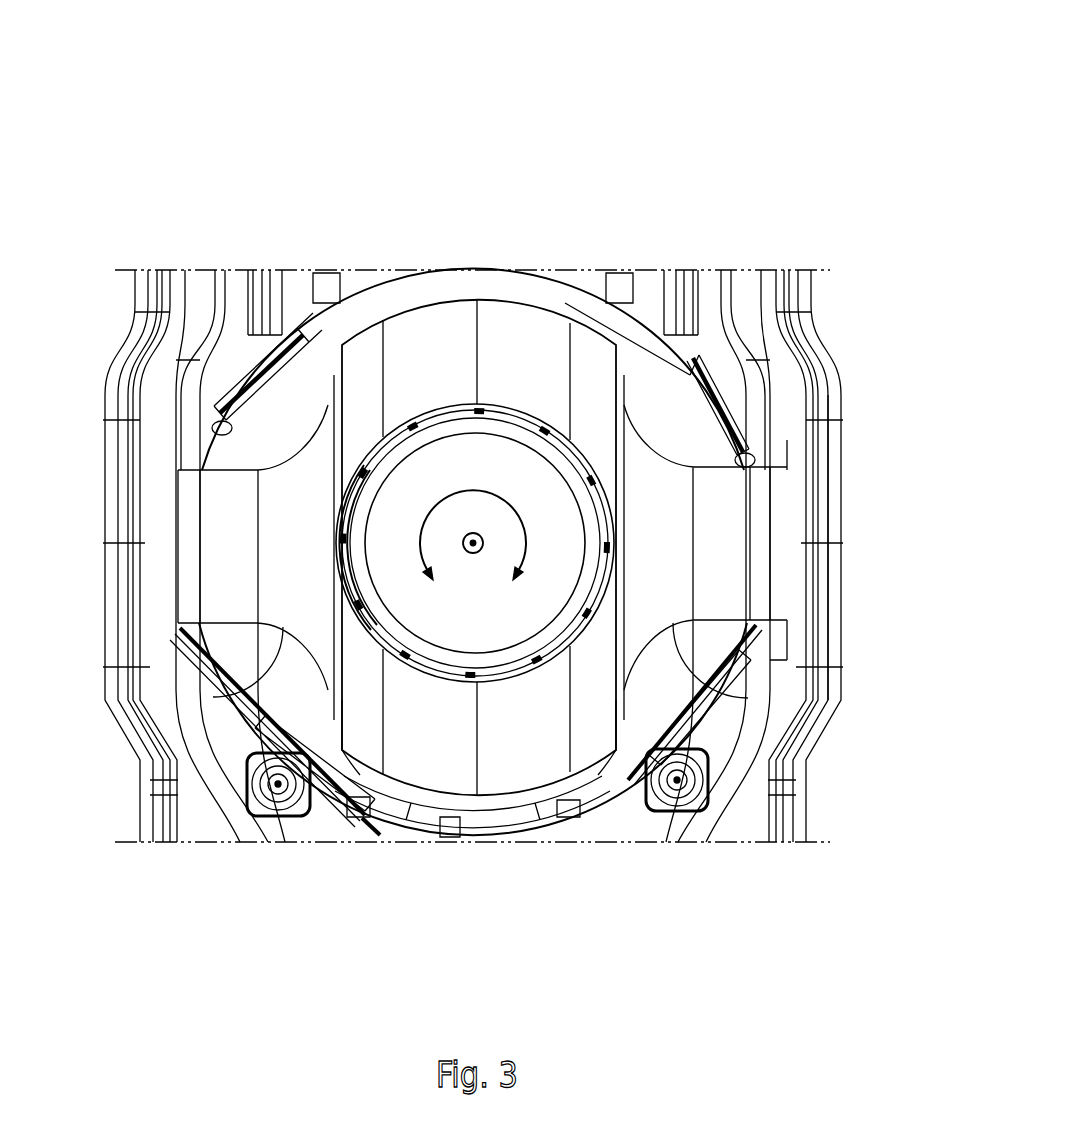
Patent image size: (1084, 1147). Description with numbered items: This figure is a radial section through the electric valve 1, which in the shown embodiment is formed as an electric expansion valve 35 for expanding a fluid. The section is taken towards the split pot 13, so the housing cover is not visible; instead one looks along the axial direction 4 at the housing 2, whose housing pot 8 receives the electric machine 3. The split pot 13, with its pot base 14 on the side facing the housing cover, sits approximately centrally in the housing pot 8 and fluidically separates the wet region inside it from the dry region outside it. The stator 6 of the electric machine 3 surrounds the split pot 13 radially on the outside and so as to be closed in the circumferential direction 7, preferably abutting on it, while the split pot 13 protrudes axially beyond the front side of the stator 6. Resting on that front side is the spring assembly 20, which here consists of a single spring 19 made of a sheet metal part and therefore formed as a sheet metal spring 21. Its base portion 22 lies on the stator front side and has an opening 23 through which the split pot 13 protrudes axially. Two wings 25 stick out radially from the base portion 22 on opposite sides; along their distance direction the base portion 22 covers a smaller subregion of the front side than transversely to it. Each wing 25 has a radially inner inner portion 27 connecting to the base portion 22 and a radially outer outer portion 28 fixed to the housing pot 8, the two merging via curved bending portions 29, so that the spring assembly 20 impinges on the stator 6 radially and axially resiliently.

The electric valve 1 is at (500, 471).
The electric expansion valve 35 is at (500, 471).
The housing 2 is at (843, 382).
The housing pot 8 is at (832, 425).
The base portion 22 is at (441, 322).
The opening 23 is at (535, 412).
The split pot 13 is at (590, 465).
The pot base 14 is at (546, 511).
The circumferential direction 7 is at (530, 543).
The axial direction 4 is at (473, 556).
The wings 25 is at (246, 567).
The outer portion 28 is at (175, 590).
The bending portion 29 is at (230, 697).
The inner portion 27 is at (352, 708).
The stator 6 is at (373, 826).
The spring 19 is at (526, 791).
The spring assembly 20 is at (474, 852).
The sheet metal spring 21 is at (474, 852).
The electric machine 3 is at (633, 817).